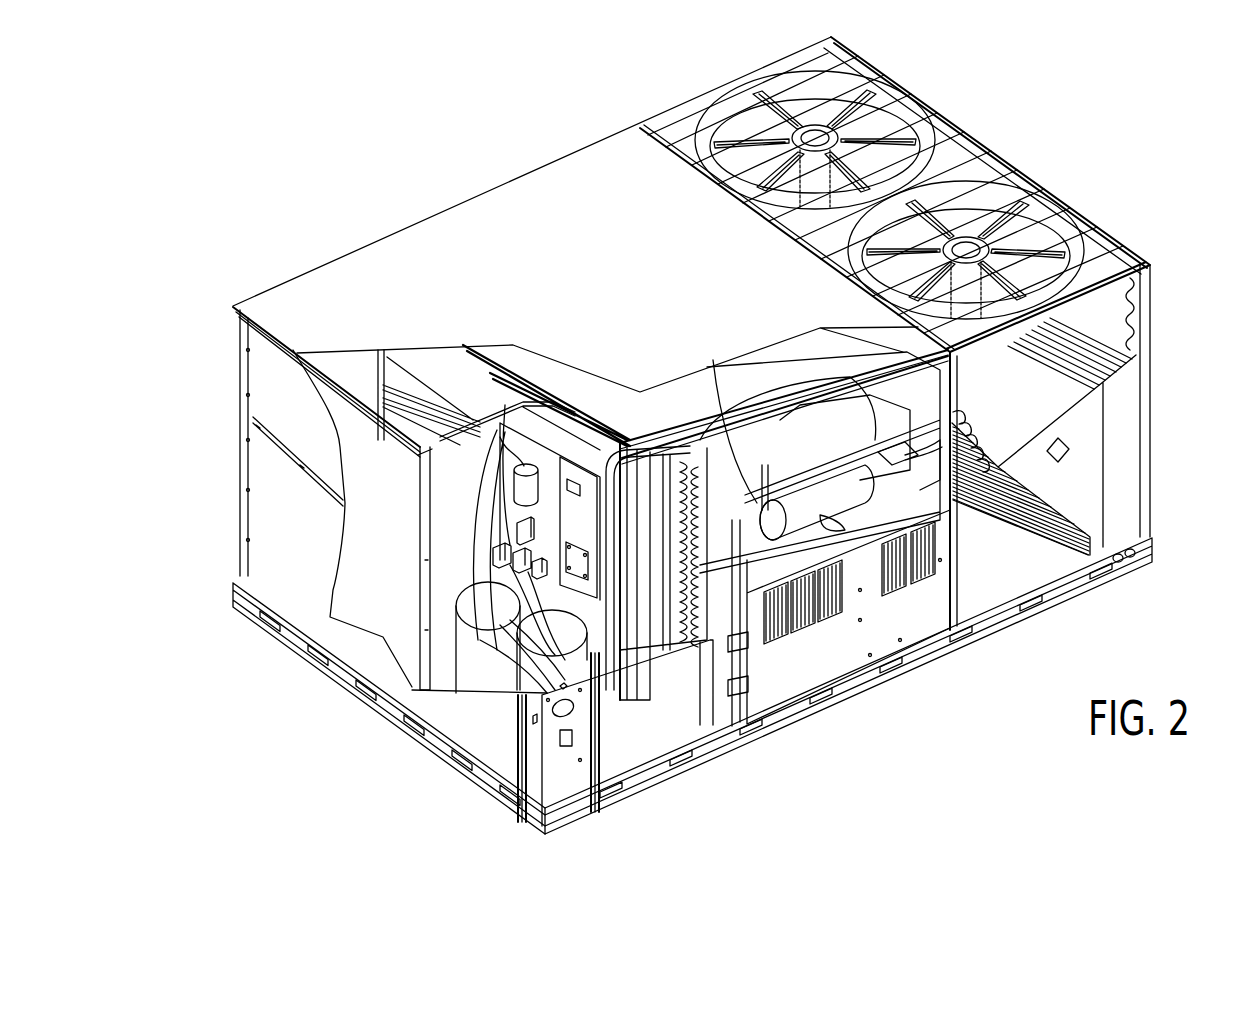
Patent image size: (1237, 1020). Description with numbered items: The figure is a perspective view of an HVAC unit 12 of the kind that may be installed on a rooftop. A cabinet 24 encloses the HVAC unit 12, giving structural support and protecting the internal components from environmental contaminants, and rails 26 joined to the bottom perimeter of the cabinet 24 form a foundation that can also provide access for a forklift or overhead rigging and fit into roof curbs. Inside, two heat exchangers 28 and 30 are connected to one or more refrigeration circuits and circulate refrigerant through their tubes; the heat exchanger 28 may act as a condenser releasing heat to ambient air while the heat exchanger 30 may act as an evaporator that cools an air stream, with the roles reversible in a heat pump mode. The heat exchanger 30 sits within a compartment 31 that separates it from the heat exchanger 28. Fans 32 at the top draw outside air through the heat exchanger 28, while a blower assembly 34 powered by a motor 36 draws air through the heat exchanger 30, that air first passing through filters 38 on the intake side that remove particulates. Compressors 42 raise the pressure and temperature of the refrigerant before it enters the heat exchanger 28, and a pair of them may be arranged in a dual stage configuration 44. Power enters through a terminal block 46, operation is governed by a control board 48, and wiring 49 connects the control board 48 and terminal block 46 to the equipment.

The HVAC unit 12 is at (702, 438).
The cabinet 24 is at (277, 557).
The rails 26 is at (298, 650).
The heat exchanger 28 is at (1146, 323).
The heat exchanger 30 is at (700, 640).
The compartment 31 is at (760, 505).
The fans 32 is at (1007, 187).
The blower assembly 34 is at (882, 447).
The motor 36 is at (818, 494).
The filters 38 is at (653, 480).
The compressors 42 is at (465, 635).
The dual stage configuration 44 is at (458, 594).
The terminal block 46 is at (505, 533).
The control board 48 is at (580, 530).
The wiring 49 is at (672, 460).